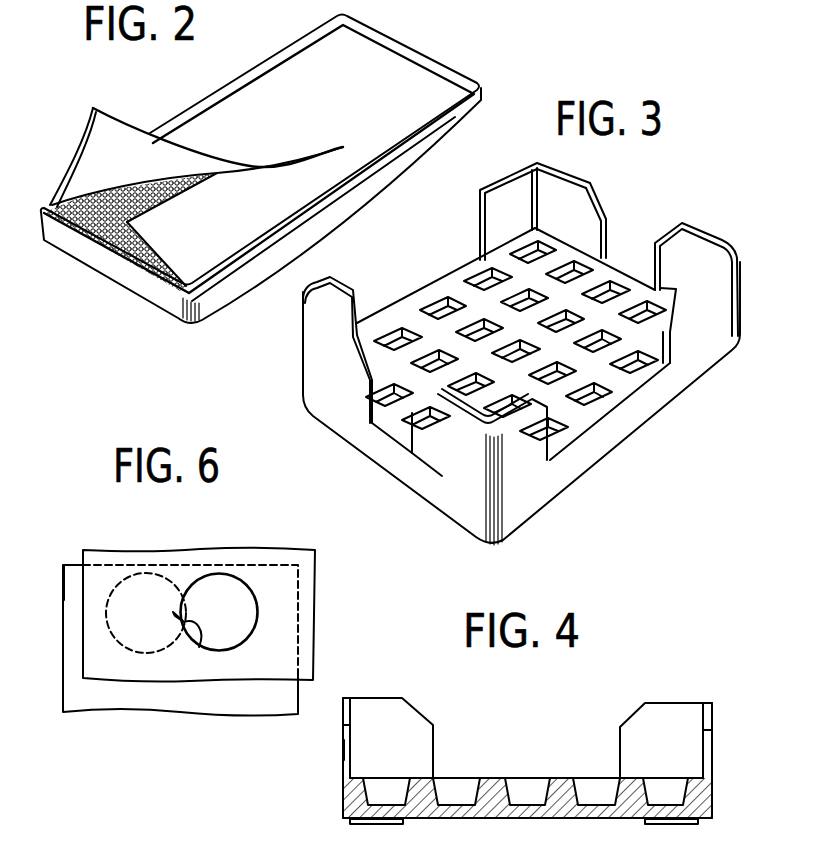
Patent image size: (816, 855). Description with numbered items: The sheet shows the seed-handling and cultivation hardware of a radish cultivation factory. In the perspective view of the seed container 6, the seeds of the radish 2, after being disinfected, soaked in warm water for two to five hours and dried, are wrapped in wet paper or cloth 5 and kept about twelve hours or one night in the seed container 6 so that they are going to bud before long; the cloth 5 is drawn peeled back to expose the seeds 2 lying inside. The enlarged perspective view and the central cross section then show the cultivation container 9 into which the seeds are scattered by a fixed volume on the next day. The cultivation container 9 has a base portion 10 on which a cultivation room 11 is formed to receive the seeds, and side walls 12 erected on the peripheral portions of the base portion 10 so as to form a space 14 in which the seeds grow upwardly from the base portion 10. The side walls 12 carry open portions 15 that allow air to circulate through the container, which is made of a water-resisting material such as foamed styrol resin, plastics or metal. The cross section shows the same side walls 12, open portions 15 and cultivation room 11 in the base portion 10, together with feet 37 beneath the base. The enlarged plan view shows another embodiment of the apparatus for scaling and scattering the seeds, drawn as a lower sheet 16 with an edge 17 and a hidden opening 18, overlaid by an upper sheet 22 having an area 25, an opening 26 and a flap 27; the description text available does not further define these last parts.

In FIG. 2, the seeds of the radish 2 is at (85, 228).
In FIG. 2, the wet paper or cloth 5 is at (105, 134).
In FIG. 2, the seed container 6 is at (156, 294).
In FIG. 3, the cultivation container 9 is at (521, 339).
In FIG. 4, the cultivation container 9 is at (543, 758).
In FIG. 3, the base portion 10 is at (595, 415).
In FIG. 4, the base portion 10 is at (543, 781).
In FIG. 3, the cultivation room 11 is at (635, 368).
In FIG. 4, the cultivation room 11 is at (512, 790).
In FIG. 3, the side walls 12 is at (520, 335).
In FIG. 4, the side walls 12 is at (655, 700).
In FIG. 3, the space 14 is at (547, 211).
In FIG. 4, the space 14 is at (490, 740).
In FIG. 3, the open portions 15 is at (480, 233).
In FIG. 4, the open portions 15 is at (433, 742).
In FIG. 6, the lower sheet 16 is at (162, 615).
In FIG. 6, the sheet edge 17 is at (75, 578).
In FIG. 6, the hidden opening 18 is at (157, 645).
In FIG. 6, the upper sheet 22 is at (352, 584).
In FIG. 6, the adhesive area 25 is at (277, 577).
In FIG. 6, the opening 26 is at (240, 640).
In FIG. 6, the flap 27 is at (200, 630).
In FIG. 4, the feet 37 is at (390, 824).